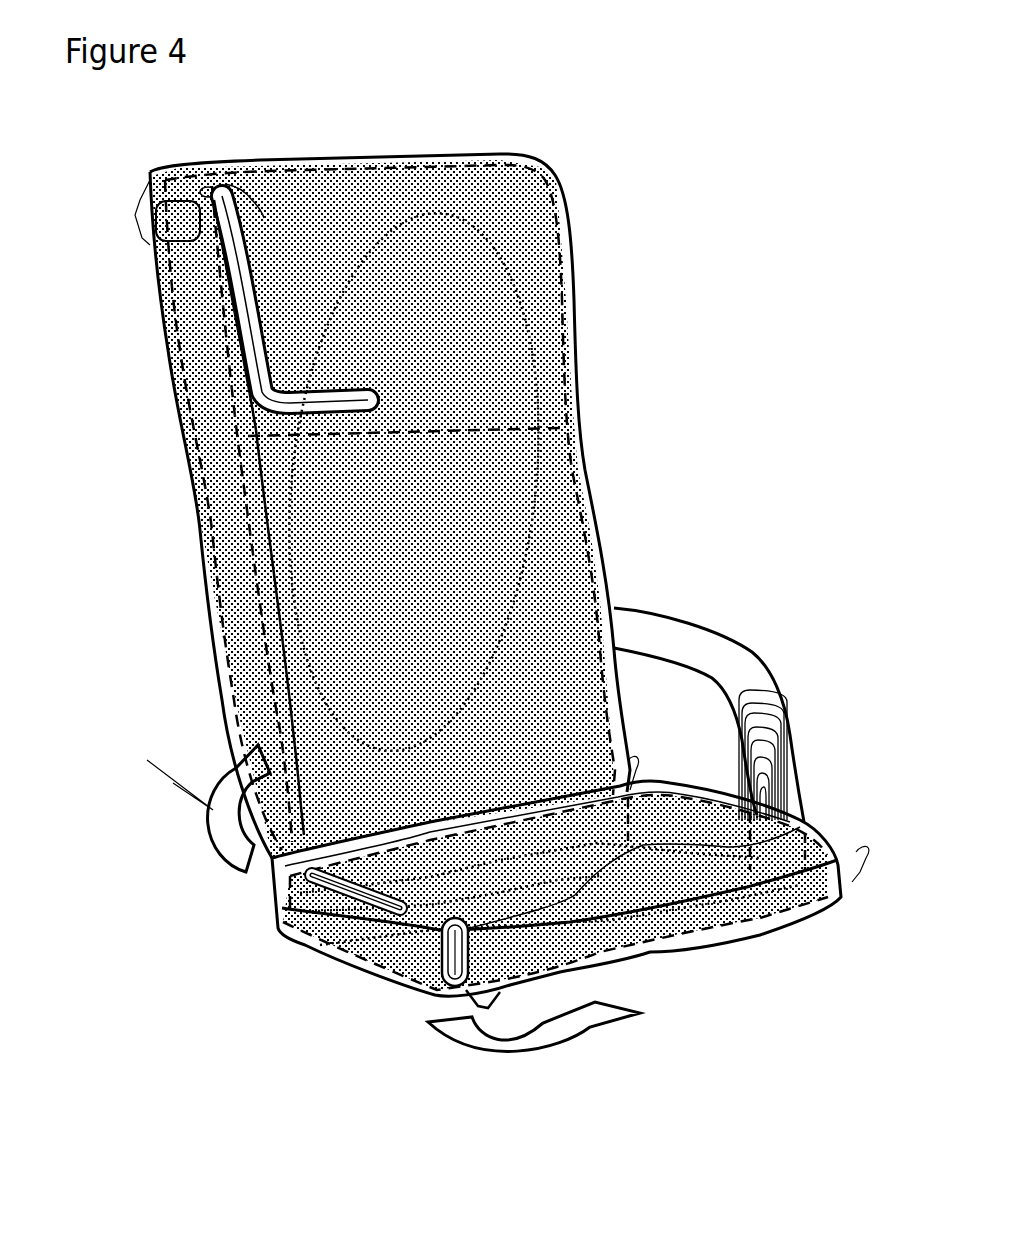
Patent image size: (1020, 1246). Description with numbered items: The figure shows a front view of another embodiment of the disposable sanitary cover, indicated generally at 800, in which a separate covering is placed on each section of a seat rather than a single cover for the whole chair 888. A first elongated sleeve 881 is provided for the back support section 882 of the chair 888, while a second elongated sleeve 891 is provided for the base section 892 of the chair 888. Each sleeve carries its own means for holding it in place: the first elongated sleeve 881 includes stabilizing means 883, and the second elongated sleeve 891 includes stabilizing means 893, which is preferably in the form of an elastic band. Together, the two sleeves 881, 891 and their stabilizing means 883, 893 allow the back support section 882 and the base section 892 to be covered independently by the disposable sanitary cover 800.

The disposable sanitary cover embodiment 800 is at (641, 198).
The first elongated sleeve 881 is at (620, 553).
The back support section 882 is at (547, 352).
The stabilizing means 883 is at (298, 514).
The chair 888 is at (464, 517).
The second elongated sleeve 891 is at (363, 965).
The base section 892 is at (272, 928).
The stabilizing means 893 is at (806, 826).